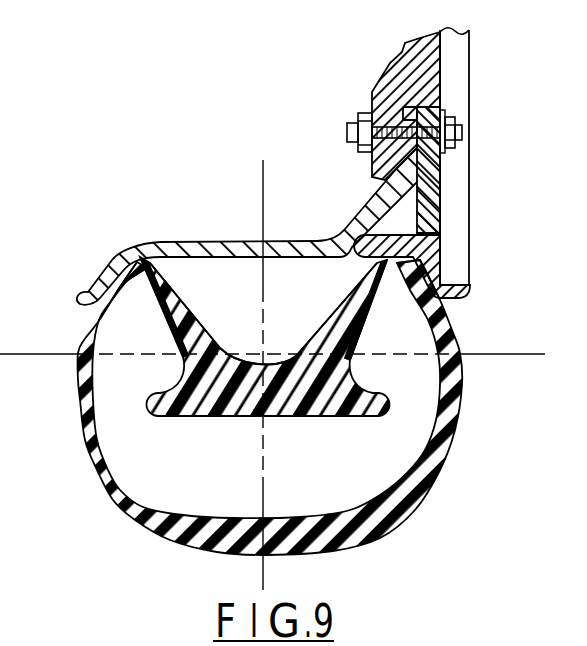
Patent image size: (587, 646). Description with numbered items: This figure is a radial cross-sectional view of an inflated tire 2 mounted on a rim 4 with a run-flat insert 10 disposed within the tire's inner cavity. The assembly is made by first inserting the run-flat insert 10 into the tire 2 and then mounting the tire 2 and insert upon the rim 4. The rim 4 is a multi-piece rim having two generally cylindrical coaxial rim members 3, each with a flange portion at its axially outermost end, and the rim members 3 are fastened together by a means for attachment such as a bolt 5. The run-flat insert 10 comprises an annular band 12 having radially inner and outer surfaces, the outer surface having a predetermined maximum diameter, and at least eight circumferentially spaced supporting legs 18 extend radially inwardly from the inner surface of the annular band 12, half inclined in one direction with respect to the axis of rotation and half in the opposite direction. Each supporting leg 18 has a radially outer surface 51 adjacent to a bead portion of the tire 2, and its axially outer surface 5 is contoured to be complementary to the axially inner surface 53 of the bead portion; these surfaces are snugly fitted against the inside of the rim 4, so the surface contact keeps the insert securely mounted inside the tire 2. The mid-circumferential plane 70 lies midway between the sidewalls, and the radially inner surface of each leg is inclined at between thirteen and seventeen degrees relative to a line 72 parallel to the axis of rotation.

The tire 2 is at (92, 455).
The rim member 3 is at (443, 97).
The rim 4 is at (172, 241).
The bolt 5 is at (469, 132).
The run-flat insert 10 is at (320, 398).
The annular band 12 is at (222, 418).
The supporting leg 18 is at (323, 342).
The radially outer surface of leg 51 is at (157, 290).
The axially inner surface of bead portion 53 is at (130, 290).
The mid-circumferential plane 70 is at (262, 186).
The line parallel to the axis of rotation 72 is at (507, 353).